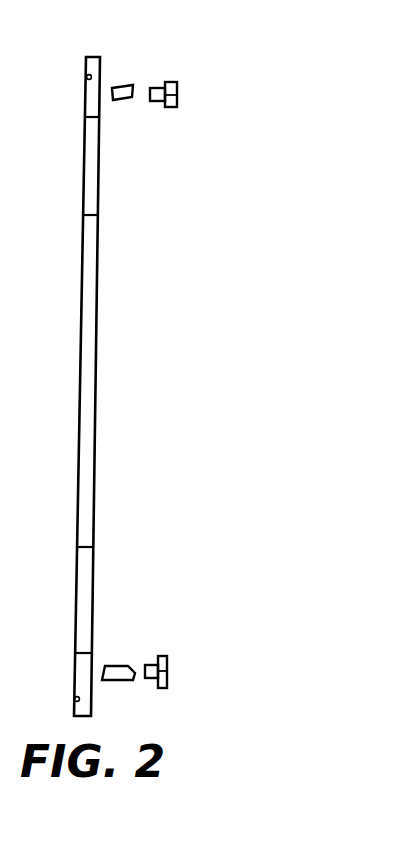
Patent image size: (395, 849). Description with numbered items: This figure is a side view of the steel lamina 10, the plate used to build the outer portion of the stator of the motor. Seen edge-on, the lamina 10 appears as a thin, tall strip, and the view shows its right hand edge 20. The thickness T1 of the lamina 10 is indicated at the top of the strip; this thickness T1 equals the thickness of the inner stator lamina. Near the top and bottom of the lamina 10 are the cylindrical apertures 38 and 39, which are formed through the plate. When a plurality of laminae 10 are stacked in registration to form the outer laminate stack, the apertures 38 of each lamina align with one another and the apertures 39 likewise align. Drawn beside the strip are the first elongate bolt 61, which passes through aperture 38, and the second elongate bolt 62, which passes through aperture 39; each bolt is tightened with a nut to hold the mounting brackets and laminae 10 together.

The lamina 10 is at (56, 545).
The right hand edge 20 is at (88, 421).
The cylindrical aperture 38 is at (86, 80).
The cylindrical aperture 39 is at (72, 700).
The first elongate bolt 61 is at (167, 108).
The second elongate bolt 62 is at (120, 665).
The thickness T1 is at (130, 20).